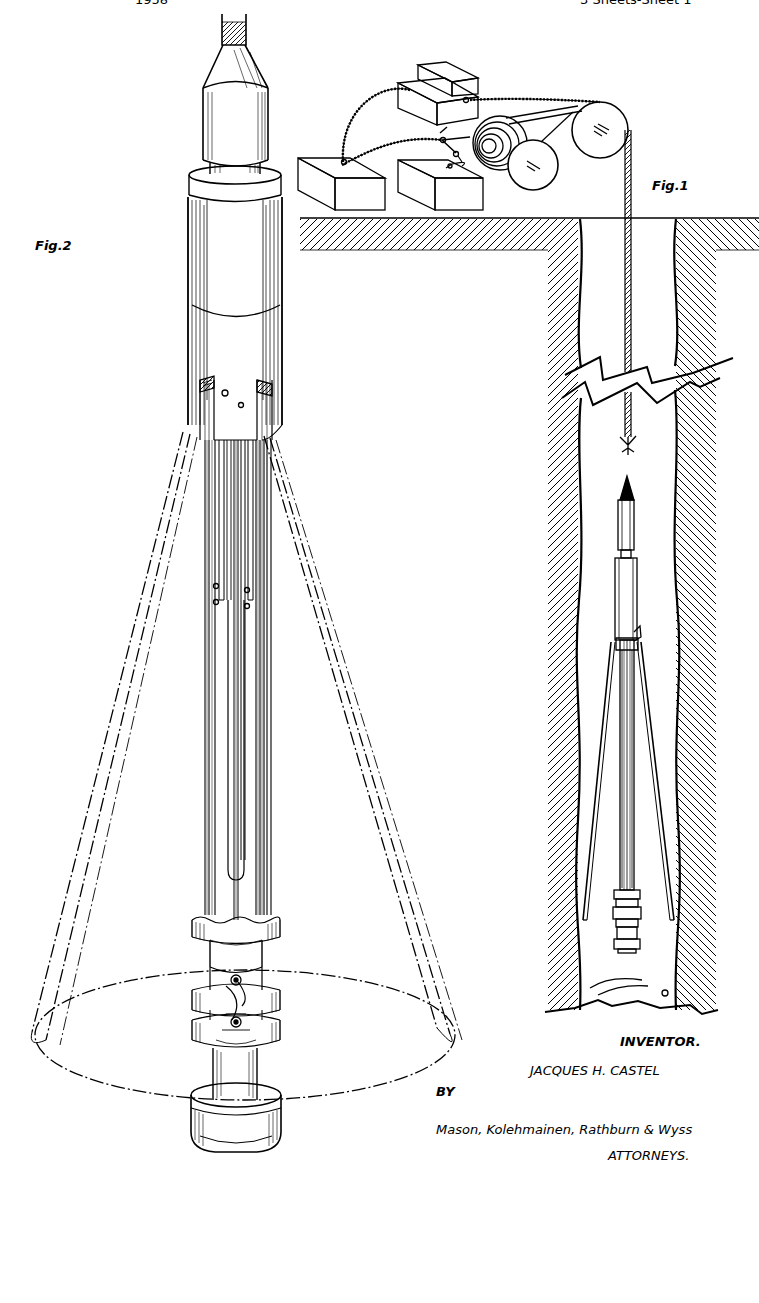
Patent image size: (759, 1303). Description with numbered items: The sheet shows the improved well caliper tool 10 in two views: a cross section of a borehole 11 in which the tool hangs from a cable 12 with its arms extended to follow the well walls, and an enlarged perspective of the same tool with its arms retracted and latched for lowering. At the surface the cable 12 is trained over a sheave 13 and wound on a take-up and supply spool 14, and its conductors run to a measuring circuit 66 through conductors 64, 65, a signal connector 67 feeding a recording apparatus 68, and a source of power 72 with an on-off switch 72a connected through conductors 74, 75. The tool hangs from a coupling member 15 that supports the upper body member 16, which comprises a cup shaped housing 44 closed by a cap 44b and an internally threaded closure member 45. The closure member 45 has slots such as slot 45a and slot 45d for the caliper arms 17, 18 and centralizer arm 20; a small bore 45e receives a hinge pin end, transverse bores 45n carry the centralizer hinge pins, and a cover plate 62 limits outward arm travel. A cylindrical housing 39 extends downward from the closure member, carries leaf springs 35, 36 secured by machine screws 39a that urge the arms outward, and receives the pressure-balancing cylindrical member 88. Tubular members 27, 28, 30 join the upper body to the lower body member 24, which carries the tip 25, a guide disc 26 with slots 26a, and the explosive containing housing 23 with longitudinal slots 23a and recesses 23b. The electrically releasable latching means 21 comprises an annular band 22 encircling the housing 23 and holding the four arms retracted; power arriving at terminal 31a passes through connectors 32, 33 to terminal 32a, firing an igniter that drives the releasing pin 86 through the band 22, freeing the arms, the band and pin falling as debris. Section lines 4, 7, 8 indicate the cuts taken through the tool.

In FIG. 1, the caliper tool 10 is at (627, 718).
In FIG. 2, the caliper tool 10 is at (171, 130).
In FIG. 1, the borehole 11 is at (580, 458).
In FIG. 1, the cable 12 is at (633, 290).
In FIG. 2, the cable 12 is at (247, 30).
In FIG. 1, the sheave 13 is at (610, 122).
In FIG. 1, the take-up and supply spool 14 is at (545, 176).
In FIG. 1, the coupling member 15 is at (634, 530).
In FIG. 2, the coupling member 15 is at (268, 111).
In FIG. 1, the upper body member 16 is at (638, 600).
In FIG. 2, the upper body member 16 is at (286, 276).
In FIG. 1, the caliper arm 17 is at (603, 710).
In FIG. 2, the caliper arm 17 is at (206, 738).
In FIG. 1, the caliper arm 18 is at (650, 706).
In FIG. 2, the caliper arm 18 is at (246, 766).
In FIG. 1, the centralizer arm 20 is at (640, 646).
In FIG. 2, the centralizer arm 20 is at (262, 850).
In FIG. 2, the electrically releasable latching means 21 is at (313, 1009).
In FIG. 1, the annular band 22 is at (640, 984).
In FIG. 2, the annular band 22 is at (262, 1062).
In FIG. 1, the explosive containing housing 23 is at (641, 912).
In FIG. 2, the explosive containing housing 23 is at (282, 1010).
In FIG. 2, the longitudinal slots 23a is at (230, 1022).
In FIG. 2, the recesses 23b is at (256, 993).
In FIG. 1, the lower body member 24 is at (638, 934).
In FIG. 2, the lower body member 24 is at (262, 1086).
In FIG. 1, the tip 25 is at (634, 948).
In FIG. 2, the tip 25 is at (282, 1120).
In FIG. 1, the guide disc 26 is at (638, 891).
In FIG. 2, the guide disc 26 is at (276, 932).
In FIG. 2, the longitudinally extending slots 26a is at (236, 956).
In FIG. 1, the tubular member 27 is at (618, 852).
In FIG. 2, the tubular member 27 is at (236, 803).
In FIG. 2, the tubular member 28 is at (220, 880).
In FIG. 1, the tubular member 30 is at (636, 876).
In FIG. 2, the tubular member 30 is at (272, 888).
In FIG. 2, the terminal 31a is at (242, 978).
In FIG. 2, the connector 32 is at (210, 997).
In FIG. 2, the terminal 32a is at (224, 1038).
In FIG. 2, the connector 33 is at (246, 982).
In FIG. 2, the leaf spring 35 is at (228, 486).
In FIG. 2, the leaf spring 36 is at (252, 500).
In FIG. 2, the cylindrical housing 39 is at (222, 462).
In FIG. 2, the machine screws 39a is at (248, 589).
In FIG. 2, the cup shaped housing 44 is at (197, 293).
In FIG. 2, the cap 44b is at (212, 170).
In FIG. 2, the closure member 45 is at (272, 362).
In FIG. 2, the longitudinal slot 45a is at (200, 380).
In FIG. 1, the longitudinal slot 45d is at (639, 630).
In FIG. 2, the longitudinal slot 45d is at (272, 388).
In FIG. 2, the small bore 45e is at (222, 393).
In FIG. 2, the transverse bores 45n is at (241, 402).
In FIG. 2, the cover plate 62 is at (207, 380).
In FIG. 1, the conductor 64 is at (440, 139).
In FIG. 1, the conductor 65 is at (396, 152).
In FIG. 1, the measuring circuit 66 is at (318, 184).
In FIG. 1, the signal connector 67 is at (372, 90).
In FIG. 1, the recording apparatus 68 is at (466, 96).
In FIG. 1, the source of power 72 is at (422, 186).
In FIG. 1, the on-off switch 72a is at (500, 153).
In FIG. 1, the conductor 74 is at (448, 140).
In FIG. 1, the conductor 75 is at (462, 158).
In FIG. 1, the releasing pin 86 is at (660, 994).
In FIG. 2, the cylindrical member 88 is at (243, 835).
In FIG. 2, the section line 4 is at (230, 376).
In FIG. 2, the section line 7 is at (231, 1035).
In FIG. 2, the section line 8 is at (235, 972).